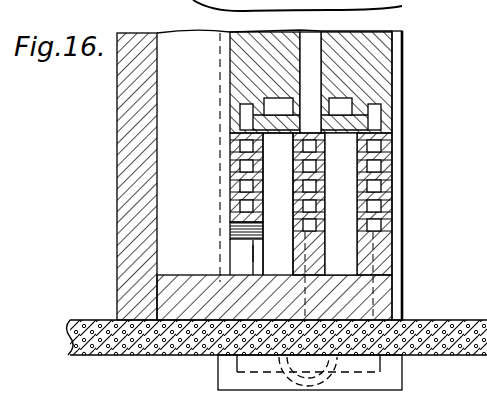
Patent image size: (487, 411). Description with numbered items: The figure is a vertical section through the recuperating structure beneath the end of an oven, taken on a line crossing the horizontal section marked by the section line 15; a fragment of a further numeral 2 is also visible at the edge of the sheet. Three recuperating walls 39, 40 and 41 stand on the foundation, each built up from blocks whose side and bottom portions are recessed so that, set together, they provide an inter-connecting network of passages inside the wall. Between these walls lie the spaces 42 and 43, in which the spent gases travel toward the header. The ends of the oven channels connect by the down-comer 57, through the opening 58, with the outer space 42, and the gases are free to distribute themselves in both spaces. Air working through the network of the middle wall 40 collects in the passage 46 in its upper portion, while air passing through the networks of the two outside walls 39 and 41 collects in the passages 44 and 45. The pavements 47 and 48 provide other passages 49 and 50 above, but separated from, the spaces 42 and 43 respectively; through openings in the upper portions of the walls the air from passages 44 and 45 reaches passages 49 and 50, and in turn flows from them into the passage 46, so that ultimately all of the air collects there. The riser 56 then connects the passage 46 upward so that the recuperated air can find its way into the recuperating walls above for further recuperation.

The section line 15— 15 is at (105, 108).
The partial reference 2 is at (474, 278).
The outside recuperating wall 39 is at (310, 204).
The middle recuperating wall 40 is at (230, 229).
The outside recuperating wall 41 is at (376, 224).
The space 42 is at (273, 243).
The space 43 is at (340, 247).
The opening or passage 44 is at (247, 122).
The opening or passage 45 is at (376, 120).
The opening or passage 46 is at (246, 186).
The pavement 47 is at (283, 122).
The pavement 48 is at (378, 164).
The passage 49 is at (272, 102).
The passage 50 is at (350, 104).
The riser 56 is at (315, 64).
The down-comer 57 is at (119, 205).
The opening 58 is at (252, 262).